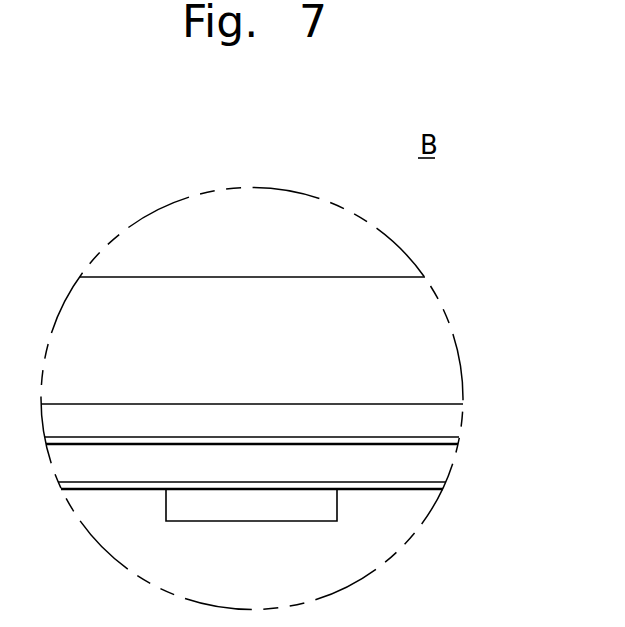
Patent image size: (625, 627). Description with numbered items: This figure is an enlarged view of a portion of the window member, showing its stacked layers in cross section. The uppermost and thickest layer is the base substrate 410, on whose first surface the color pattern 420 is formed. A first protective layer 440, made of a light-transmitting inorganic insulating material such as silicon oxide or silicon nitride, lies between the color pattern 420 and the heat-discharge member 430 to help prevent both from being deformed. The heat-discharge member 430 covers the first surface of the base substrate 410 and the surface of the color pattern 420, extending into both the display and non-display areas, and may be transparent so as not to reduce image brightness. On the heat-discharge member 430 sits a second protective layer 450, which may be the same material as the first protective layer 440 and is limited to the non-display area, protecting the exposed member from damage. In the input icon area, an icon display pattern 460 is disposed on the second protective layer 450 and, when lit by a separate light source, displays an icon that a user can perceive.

The base substrate 410 is at (437, 353).
The color pattern 420 is at (452, 420).
The first protective layer 440 is at (457, 441).
The heat-discharge member 430 is at (442, 464).
The second protective layer 450 is at (435, 486).
The icon display pattern 460 is at (333, 502).